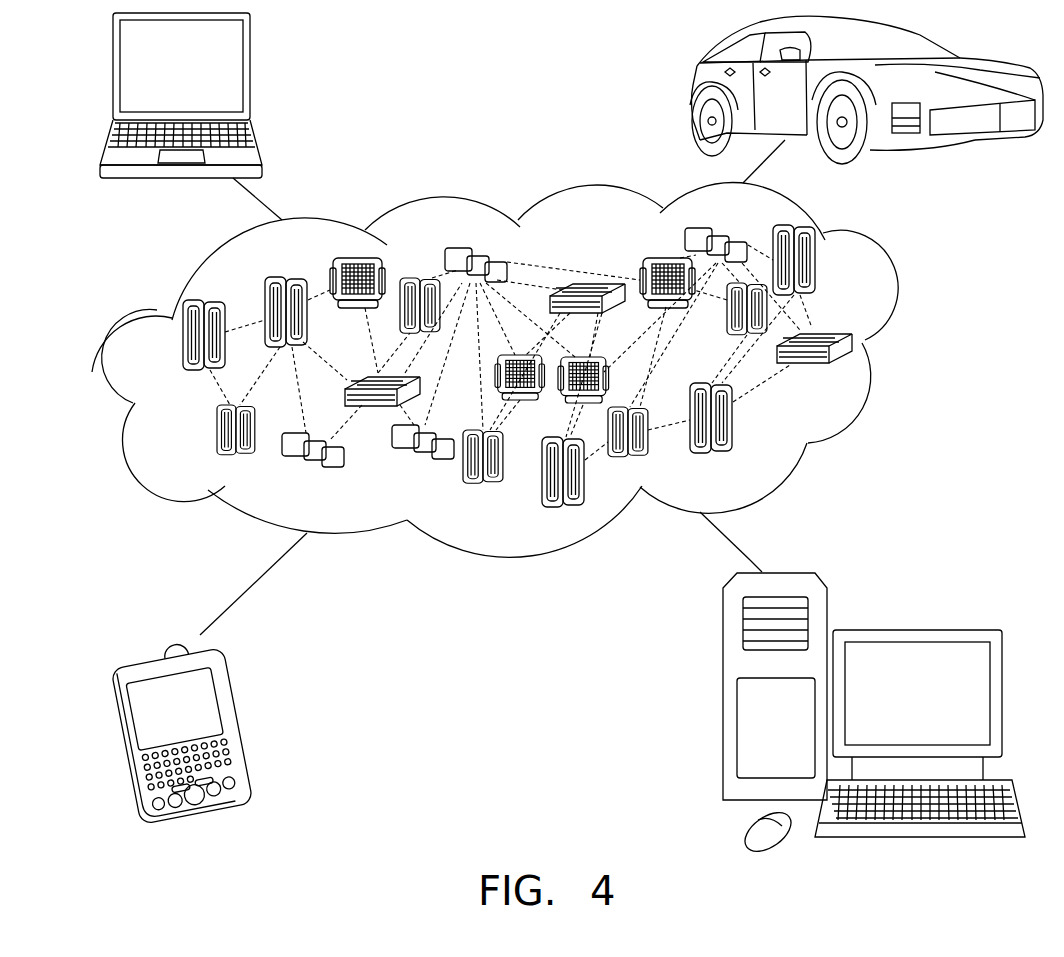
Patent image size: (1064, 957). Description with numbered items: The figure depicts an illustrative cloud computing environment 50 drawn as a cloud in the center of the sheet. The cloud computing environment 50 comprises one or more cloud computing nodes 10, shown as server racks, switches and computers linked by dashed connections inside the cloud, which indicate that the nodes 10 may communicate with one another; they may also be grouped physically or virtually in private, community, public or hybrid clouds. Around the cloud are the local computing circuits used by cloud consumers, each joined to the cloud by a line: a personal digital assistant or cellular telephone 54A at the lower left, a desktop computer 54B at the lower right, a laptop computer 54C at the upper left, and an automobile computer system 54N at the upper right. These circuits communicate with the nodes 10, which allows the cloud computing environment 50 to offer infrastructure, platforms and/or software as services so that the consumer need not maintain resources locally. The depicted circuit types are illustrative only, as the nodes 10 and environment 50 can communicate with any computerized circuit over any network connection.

The cloud computing environment 50 is at (917, 343).
The cloud computing node 10 is at (860, 374).
The personal digital assistant or cellular telephone 54A is at (240, 727).
The desktop computer 54B is at (913, 628).
The laptop computer 54C is at (250, 77).
The automobile computer system 54N is at (695, 90).